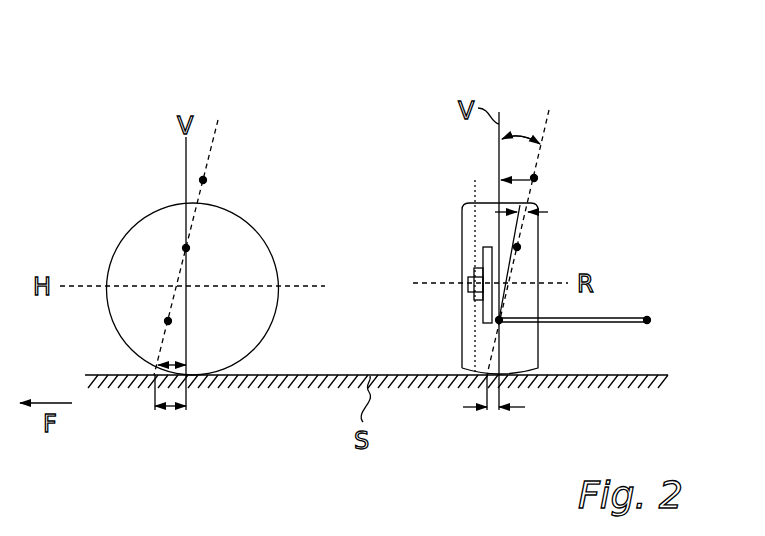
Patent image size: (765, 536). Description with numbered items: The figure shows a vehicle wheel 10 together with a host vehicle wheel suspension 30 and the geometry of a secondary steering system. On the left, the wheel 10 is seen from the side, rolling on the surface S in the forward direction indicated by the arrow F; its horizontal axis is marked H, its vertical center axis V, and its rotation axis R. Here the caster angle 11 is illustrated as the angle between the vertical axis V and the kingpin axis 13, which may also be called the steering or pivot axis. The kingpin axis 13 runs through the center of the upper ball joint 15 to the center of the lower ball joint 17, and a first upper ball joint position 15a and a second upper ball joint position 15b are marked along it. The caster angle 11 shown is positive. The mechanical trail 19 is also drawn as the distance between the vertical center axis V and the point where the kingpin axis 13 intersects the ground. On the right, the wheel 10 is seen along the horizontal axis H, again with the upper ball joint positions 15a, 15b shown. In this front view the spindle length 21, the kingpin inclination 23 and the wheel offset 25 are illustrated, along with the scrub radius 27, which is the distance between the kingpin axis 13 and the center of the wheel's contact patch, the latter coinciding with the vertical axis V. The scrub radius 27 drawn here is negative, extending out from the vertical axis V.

The vehicle wheel 10 is at (408, 118).
The caster angle 11 is at (180, 365).
The kingpin axis 13 is at (577, 122).
The upper ball joint 15 is at (233, 195).
The first upper ball joint position 15a is at (186, 248).
The second upper ball joint position 15b is at (203, 180).
The lower ball joint 17 is at (168, 321).
The mechanical trail 19 is at (169, 409).
The spindle length 21 is at (548, 212).
The kingpin inclination 23 is at (519, 136).
The wheel offset 25 is at (473, 180).
The scrub radius 27 is at (512, 401).
The host vehicle wheel suspension 30 is at (665, 132).